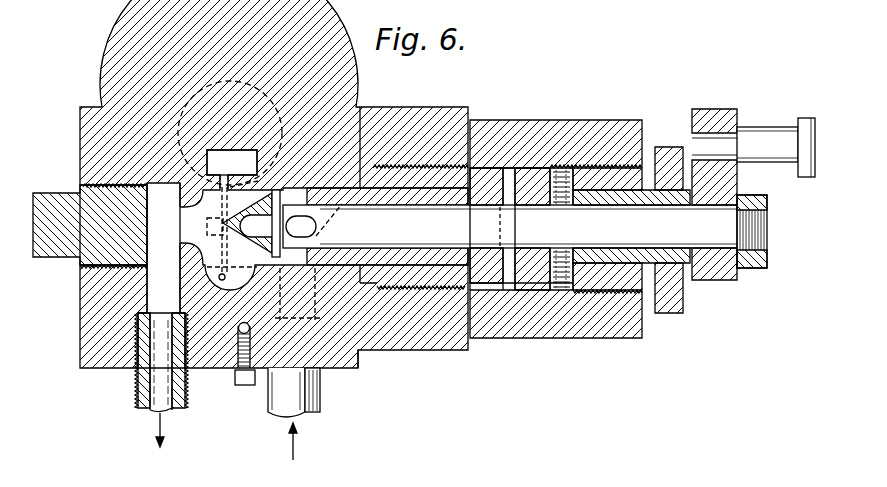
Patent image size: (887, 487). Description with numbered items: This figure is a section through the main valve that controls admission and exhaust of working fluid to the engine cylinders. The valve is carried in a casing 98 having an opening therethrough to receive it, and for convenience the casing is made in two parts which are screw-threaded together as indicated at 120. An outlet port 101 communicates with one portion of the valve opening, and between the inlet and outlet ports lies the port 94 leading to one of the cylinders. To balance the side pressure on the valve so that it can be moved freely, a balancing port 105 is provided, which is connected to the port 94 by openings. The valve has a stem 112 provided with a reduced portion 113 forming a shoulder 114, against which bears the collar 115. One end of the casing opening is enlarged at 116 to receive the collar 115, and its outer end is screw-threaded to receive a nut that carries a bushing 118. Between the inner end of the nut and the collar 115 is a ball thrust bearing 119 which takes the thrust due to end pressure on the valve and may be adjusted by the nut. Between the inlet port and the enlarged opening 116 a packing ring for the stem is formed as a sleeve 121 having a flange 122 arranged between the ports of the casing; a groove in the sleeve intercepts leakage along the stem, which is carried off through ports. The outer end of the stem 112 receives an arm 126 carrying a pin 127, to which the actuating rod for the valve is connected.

The port 94 is at (232, 170).
The casing 98 is at (98, 358).
The outlet port 101 is at (150, 238).
The balancing port 105 is at (238, 233).
The stem 112 is at (510, 226).
The reduced portion 113 is at (631, 226).
The shoulder 114 is at (517, 226).
The collar 115 is at (530, 186).
The enlarged opening 116 is at (508, 283).
The bushing 118 is at (670, 312).
The ball thrust bearing 119 is at (563, 187).
The screw-threaded joint 120 is at (435, 166).
The sleeve 121 is at (473, 187).
The flange 122 is at (375, 283).
The arm 126 is at (718, 274).
The pin 127 is at (762, 133).